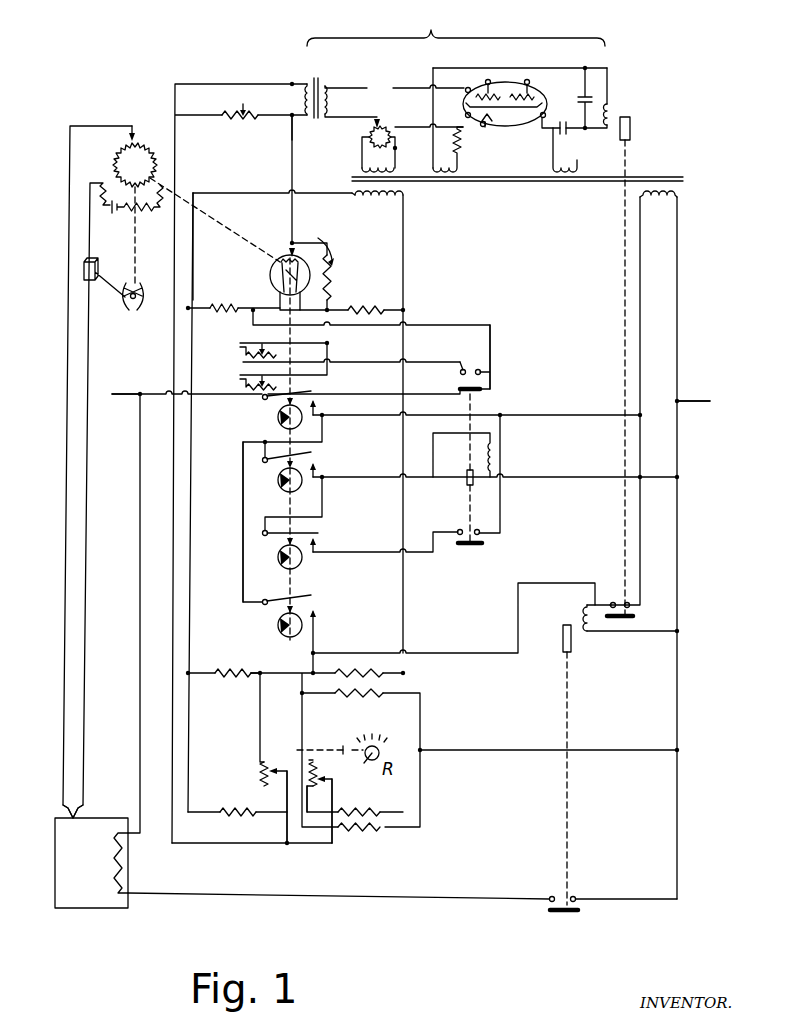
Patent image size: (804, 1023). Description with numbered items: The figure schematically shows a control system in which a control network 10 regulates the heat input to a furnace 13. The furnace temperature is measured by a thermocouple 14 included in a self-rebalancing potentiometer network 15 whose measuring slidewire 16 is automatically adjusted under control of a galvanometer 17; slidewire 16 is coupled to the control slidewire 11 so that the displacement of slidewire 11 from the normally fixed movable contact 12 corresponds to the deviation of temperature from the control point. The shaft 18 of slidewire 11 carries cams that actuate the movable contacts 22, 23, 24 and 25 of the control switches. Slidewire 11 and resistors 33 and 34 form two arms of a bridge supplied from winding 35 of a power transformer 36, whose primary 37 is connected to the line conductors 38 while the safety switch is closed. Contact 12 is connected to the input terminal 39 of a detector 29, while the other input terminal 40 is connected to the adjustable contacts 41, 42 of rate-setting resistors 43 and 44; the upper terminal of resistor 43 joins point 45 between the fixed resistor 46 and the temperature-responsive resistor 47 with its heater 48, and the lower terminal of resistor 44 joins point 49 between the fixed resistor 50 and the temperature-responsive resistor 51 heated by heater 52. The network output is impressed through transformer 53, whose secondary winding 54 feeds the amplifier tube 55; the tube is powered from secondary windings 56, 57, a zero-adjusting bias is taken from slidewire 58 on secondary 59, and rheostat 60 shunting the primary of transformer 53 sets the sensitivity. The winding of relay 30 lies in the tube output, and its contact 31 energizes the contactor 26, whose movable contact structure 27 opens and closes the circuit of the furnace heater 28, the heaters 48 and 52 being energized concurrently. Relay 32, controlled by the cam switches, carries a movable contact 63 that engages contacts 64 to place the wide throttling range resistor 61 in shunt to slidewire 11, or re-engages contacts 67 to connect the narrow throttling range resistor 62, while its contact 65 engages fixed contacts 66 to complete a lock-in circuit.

The control network 10 is at (223, 522).
The control slidewire 11 is at (276, 256).
The movable contact 12 is at (294, 248).
The furnace 13 is at (91, 863).
The thermocouple 14 is at (83, 814).
The self-rebalancing potentiometer network 15 is at (135, 165).
The measuring slidewire 16 is at (144, 140).
The galvanometer 17 is at (94, 274).
The shaft 18 is at (223, 238).
The movable contact of switch L2 22 is at (278, 417).
The movable contact of switch L 23 is at (278, 472).
The movable contact of switch L1 24 is at (278, 545).
The movable contact of switch L3 25 is at (278, 612).
The relay or contactor 26 is at (580, 610).
The movable contact structure 27 is at (566, 913).
The furnace heater 28 is at (128, 865).
The detector 29 is at (456, 26).
The relay 30 is at (613, 113).
The contact of relay 30 31 is at (634, 616).
The relay 32 is at (496, 456).
The resistor 33 is at (244, 306).
The resistor 34 is at (384, 294).
The transformer winding 35 is at (387, 200).
The power transformer 36 is at (517, 193).
The primary winding 37 is at (655, 202).
The power line conductors 38 is at (714, 397).
The input terminal 39 is at (290, 116).
The input terminal 40 is at (297, 78).
The adjustable contact 41 is at (266, 786).
The adjustable contact 42 is at (332, 779).
The rate-setting resistor 43 is at (290, 745).
The rate-setting resistor 44 is at (322, 766).
The network point 45 is at (256, 680).
The resistor 46 is at (221, 669).
The temperature-responsive resistor 47 is at (405, 665).
The heater 48 is at (352, 696).
The network point 49 is at (320, 799).
The resistor 50 is at (241, 808).
The temperature-responsive resistor 51 is at (425, 797).
The heater 52 is at (354, 832).
The transformer 53 is at (320, 76).
The secondary winding 54 is at (331, 100).
The amplifier tube 55 is at (501, 82).
The secondary winding 56 is at (452, 140).
The secondary winding 57 is at (578, 160).
The slidewire 58 is at (368, 134).
The secondary winding 59 is at (363, 165).
The rheostat 60 is at (224, 120).
The wide throttling range resistor 61 is at (242, 340).
The narrow throttling range resistor 62 is at (240, 375).
The movable contact 63 is at (494, 380).
The fixed contacts 64 is at (476, 368).
The lock-in contact 65 is at (478, 546).
The fixed contacts 66 is at (479, 528).
The fixed contacts 67 is at (484, 393).